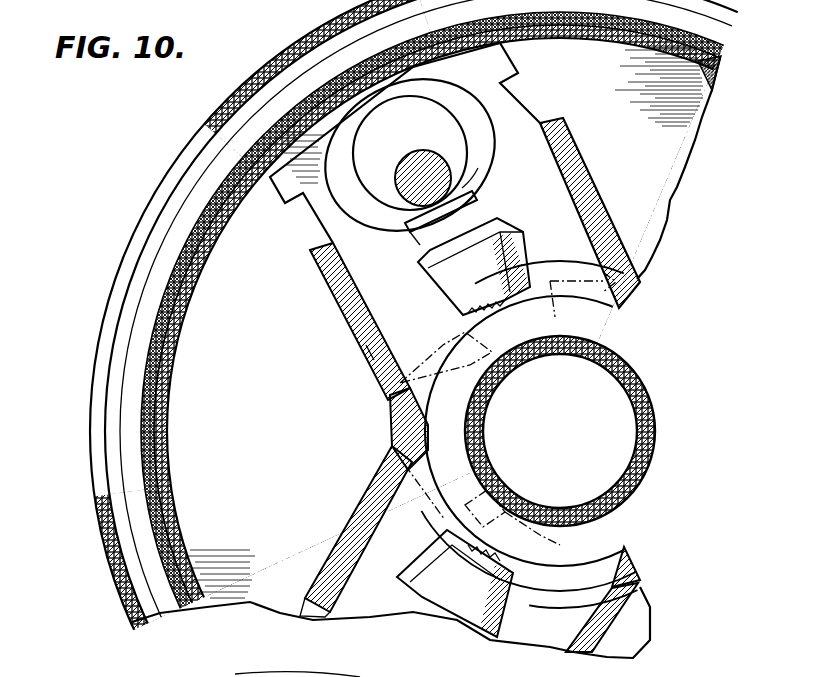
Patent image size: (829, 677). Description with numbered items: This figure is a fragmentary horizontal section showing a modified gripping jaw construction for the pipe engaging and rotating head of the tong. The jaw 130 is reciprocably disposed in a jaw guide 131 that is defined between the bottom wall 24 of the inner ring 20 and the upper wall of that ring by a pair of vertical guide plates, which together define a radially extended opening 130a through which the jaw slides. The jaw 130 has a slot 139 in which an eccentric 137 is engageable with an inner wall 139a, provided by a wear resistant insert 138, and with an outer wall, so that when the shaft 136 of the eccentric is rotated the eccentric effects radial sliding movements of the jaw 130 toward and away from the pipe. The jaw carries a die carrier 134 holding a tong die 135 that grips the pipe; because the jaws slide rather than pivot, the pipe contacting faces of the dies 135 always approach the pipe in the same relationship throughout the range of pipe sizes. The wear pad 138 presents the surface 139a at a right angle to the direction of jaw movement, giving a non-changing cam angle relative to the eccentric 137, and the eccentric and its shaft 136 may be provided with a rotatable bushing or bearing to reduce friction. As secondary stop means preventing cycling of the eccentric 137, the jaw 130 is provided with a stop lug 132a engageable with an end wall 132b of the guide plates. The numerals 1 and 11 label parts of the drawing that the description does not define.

The hub 1 is at (656, 441).
The rim 11 is at (167, 172).
The inner ring 20 is at (712, 84).
The bottom wall 24 is at (642, 624).
The jaw 130 is at (390, 308).
The radially extended opening 130a is at (356, 286).
The jaw guide 131 is at (368, 343).
The stop lug 132a is at (293, 202).
The end wall 132b is at (318, 252).
The die carrier 134 is at (512, 232).
The tong die 135 is at (512, 300).
The shaft 136 is at (410, 173).
The eccentric 137 is at (410, 153).
The wear resistant insert 138 is at (416, 224).
The slot 139 is at (407, 96).
The inner wall 139a is at (472, 181).